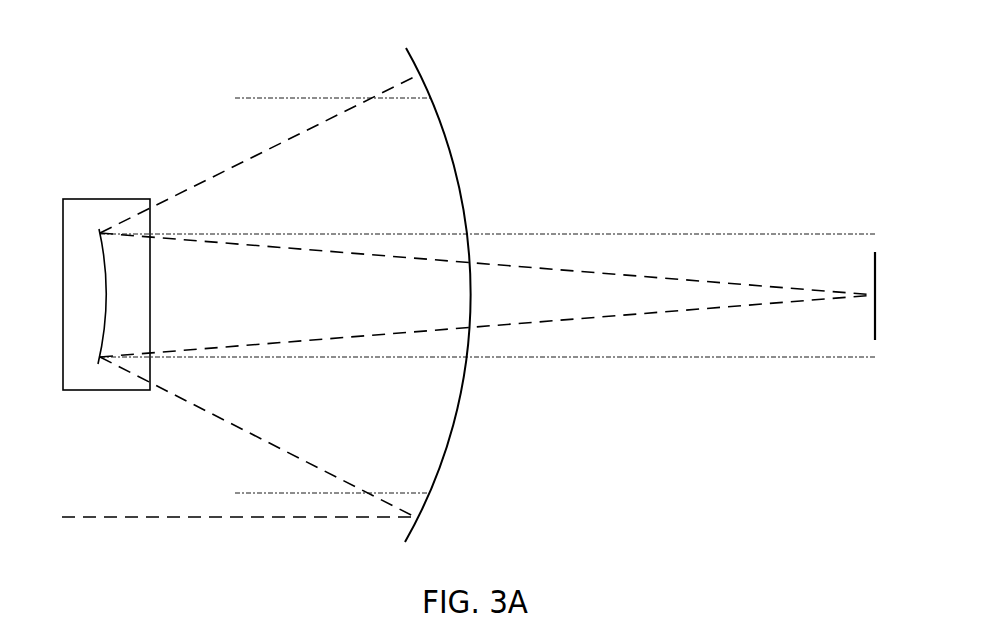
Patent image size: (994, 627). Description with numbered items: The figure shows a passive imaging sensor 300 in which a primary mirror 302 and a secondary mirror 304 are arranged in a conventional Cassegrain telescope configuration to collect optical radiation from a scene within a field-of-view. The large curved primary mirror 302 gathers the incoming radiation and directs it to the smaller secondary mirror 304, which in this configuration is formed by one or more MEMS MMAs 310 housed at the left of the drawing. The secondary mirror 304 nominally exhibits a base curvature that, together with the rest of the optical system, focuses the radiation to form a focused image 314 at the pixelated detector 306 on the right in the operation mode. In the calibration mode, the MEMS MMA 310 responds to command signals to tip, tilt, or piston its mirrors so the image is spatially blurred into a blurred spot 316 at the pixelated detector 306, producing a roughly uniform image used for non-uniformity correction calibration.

The passive imaging sensor 300 is at (808, 58).
The primary mirror 302 is at (454, 166).
The secondary mirror 304 is at (105, 296).
The pixelated detector 306 is at (877, 278).
The MEMS MMA 310 is at (108, 199).
The focused image 314 is at (707, 311).
The blurred spot 316 is at (757, 233).